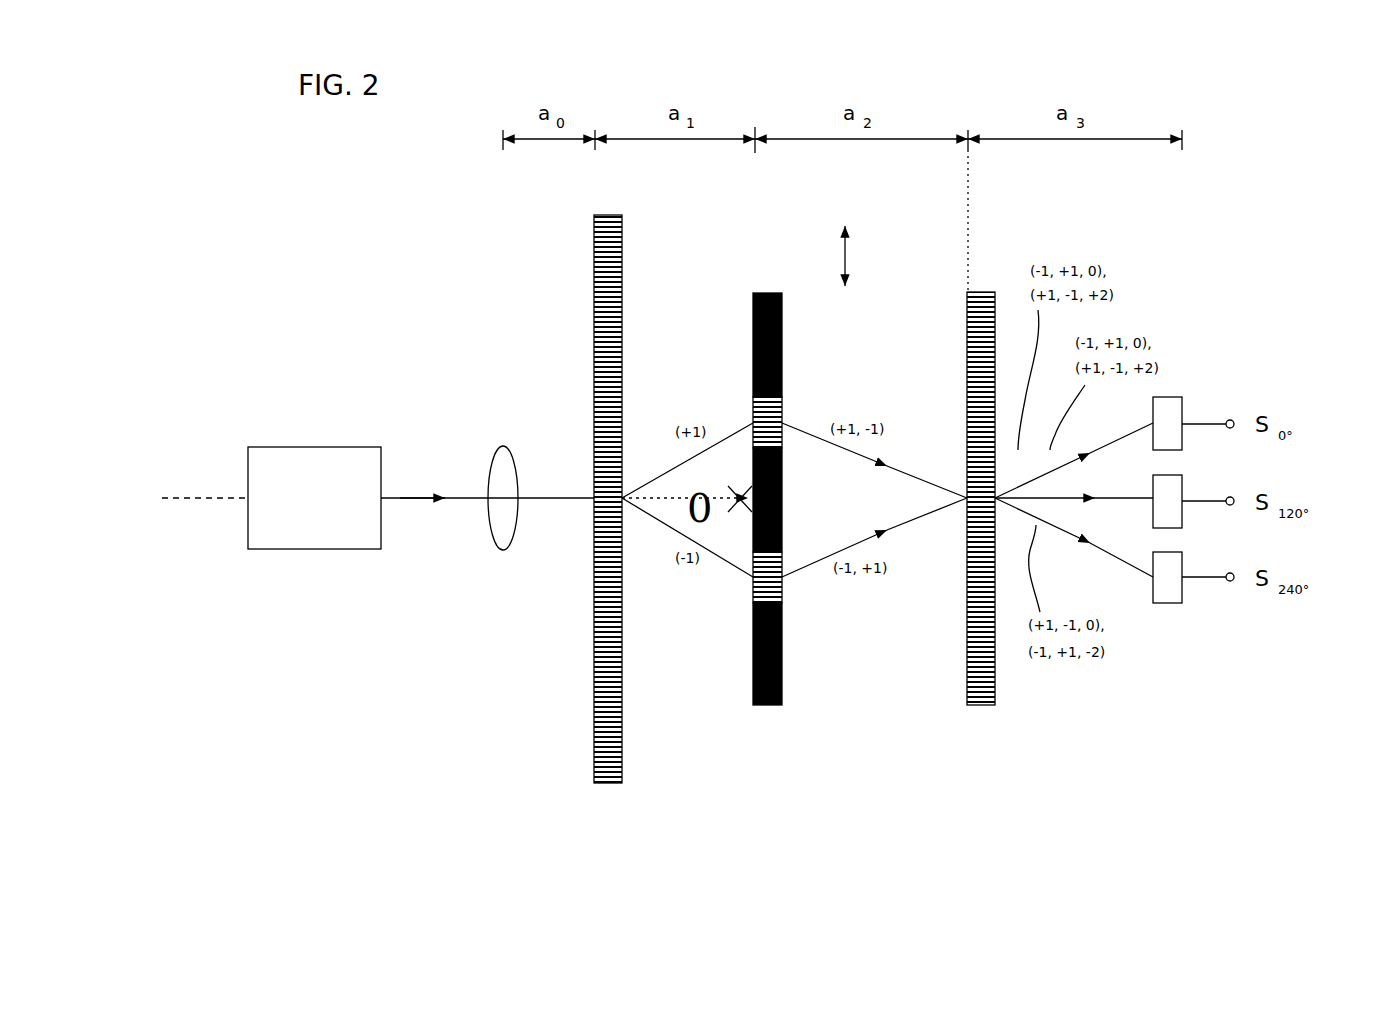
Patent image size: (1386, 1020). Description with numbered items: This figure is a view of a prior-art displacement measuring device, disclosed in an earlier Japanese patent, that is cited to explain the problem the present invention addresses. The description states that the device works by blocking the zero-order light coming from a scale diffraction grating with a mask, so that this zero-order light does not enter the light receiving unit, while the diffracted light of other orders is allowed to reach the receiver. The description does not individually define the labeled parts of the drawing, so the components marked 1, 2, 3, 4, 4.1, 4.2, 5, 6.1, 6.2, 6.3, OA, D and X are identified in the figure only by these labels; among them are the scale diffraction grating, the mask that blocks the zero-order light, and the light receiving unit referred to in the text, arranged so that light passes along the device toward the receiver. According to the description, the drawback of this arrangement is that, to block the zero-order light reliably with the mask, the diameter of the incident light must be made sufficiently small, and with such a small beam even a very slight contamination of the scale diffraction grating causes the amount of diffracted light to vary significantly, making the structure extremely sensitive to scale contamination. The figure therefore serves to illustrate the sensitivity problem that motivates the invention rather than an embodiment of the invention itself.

The light source 1 is at (318, 535).
The collimating lens 2 is at (503, 518).
The first grating 3 is at (595, 725).
The second grating (scale) 4 is at (793, 549).
The opaque region of second grating 4.1 is at (782, 338).
The opaque region of second grating 4.2 is at (782, 643).
The third grating 5 is at (968, 665).
The detector 240° 6.1 is at (1172, 585).
The detector 120° 6.2 is at (1175, 513).
The detector 0° 6.3 is at (1178, 412).
The optical axis OA is at (200, 497).
The plane of detection D is at (966, 139).
The measuring direction X is at (860, 256).